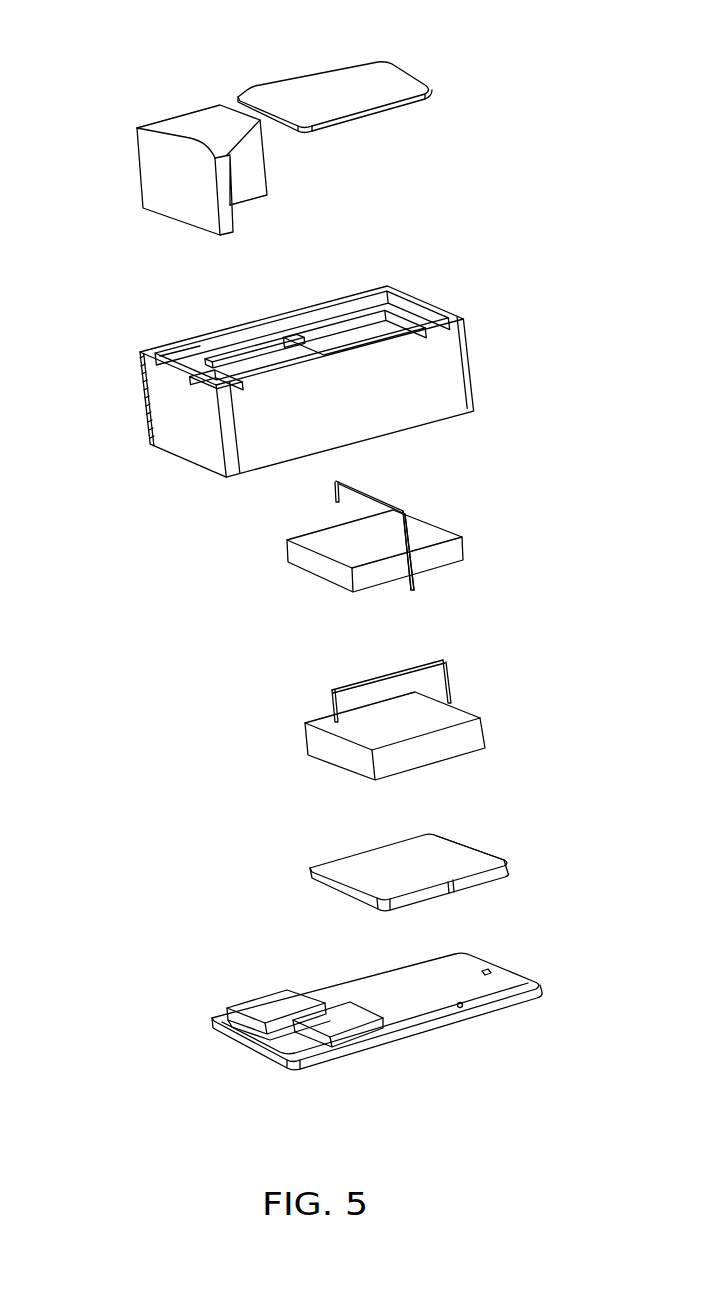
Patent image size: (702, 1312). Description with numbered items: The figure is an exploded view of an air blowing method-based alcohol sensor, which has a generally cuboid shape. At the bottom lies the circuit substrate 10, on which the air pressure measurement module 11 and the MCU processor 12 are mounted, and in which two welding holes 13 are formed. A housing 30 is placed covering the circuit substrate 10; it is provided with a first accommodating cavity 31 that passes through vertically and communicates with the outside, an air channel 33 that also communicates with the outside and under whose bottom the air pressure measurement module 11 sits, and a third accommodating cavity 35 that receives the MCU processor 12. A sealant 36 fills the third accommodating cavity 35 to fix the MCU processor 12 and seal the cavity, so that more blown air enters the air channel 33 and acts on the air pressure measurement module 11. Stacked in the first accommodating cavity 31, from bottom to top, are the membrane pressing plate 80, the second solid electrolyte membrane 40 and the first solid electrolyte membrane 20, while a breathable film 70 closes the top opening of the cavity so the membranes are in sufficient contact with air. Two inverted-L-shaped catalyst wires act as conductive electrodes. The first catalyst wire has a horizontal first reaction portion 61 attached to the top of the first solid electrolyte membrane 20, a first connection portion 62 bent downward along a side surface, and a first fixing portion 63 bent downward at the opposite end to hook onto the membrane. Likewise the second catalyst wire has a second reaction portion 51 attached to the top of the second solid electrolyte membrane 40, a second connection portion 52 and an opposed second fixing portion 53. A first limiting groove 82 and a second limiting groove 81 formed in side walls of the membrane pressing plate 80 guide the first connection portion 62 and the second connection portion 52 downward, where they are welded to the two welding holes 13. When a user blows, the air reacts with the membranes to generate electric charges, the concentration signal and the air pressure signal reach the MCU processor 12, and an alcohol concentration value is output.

The circuit substrate 10 is at (337, 1050).
The air pressure measurement module 11 is at (337, 1017).
The MCU processor 12 is at (267, 1008).
The welding holes 13 is at (487, 975).
The first solid electrolyte membrane 20 is at (313, 567).
The housing 30 is at (265, 352).
The first accommodating cavity 31 is at (360, 333).
The air channel 33 is at (267, 370).
The third accommodating cavity 35 is at (198, 350).
The sealant 36 is at (192, 127).
The second solid electrolyte membrane 40 is at (343, 753).
The second reaction portion 51 is at (396, 674).
The second connection portion 52 is at (452, 683).
The second fixing portion 53 is at (332, 705).
The first reaction portion 61 is at (411, 526).
The first connection portion 62 is at (407, 542).
The first fixing portion 63 is at (332, 493).
The breathable film 70 is at (343, 82).
The membrane pressing plate 80 is at (415, 880).
The second limiting groove 81 is at (470, 848).
The first limiting groove 82 is at (447, 893).